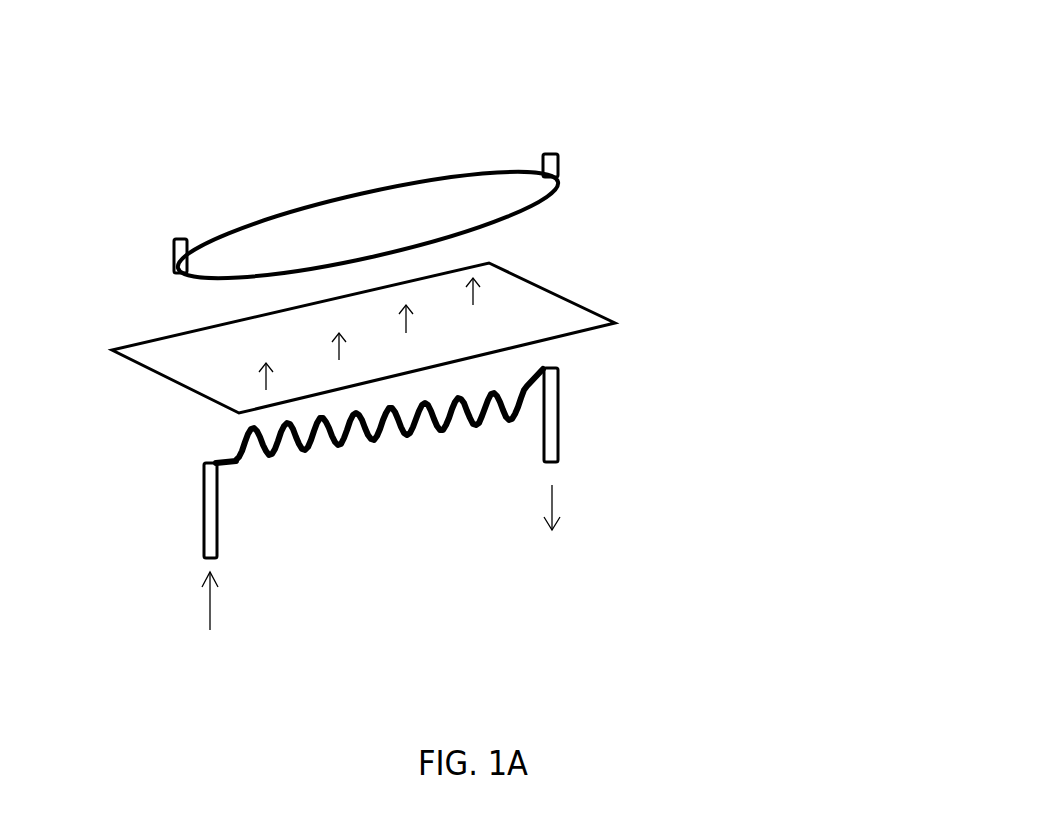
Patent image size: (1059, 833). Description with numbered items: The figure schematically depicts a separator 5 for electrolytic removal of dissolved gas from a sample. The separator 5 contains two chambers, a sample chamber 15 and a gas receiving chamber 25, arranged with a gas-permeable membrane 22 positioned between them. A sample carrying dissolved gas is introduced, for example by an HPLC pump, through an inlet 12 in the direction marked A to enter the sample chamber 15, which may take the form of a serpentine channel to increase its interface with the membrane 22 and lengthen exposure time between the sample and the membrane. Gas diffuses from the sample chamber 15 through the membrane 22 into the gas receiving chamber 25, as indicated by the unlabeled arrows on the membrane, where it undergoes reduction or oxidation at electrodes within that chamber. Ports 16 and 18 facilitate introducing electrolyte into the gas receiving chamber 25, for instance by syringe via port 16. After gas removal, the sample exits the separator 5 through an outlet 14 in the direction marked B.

The separator 5 is at (660, 53).
The inlet 12 is at (192, 543).
The outlet 14 is at (567, 457).
The sample chamber 15 is at (383, 463).
The port 16 is at (165, 238).
The port 18 is at (567, 163).
The membrane 22 is at (573, 296).
The gas receiving chamber 25 is at (305, 198).